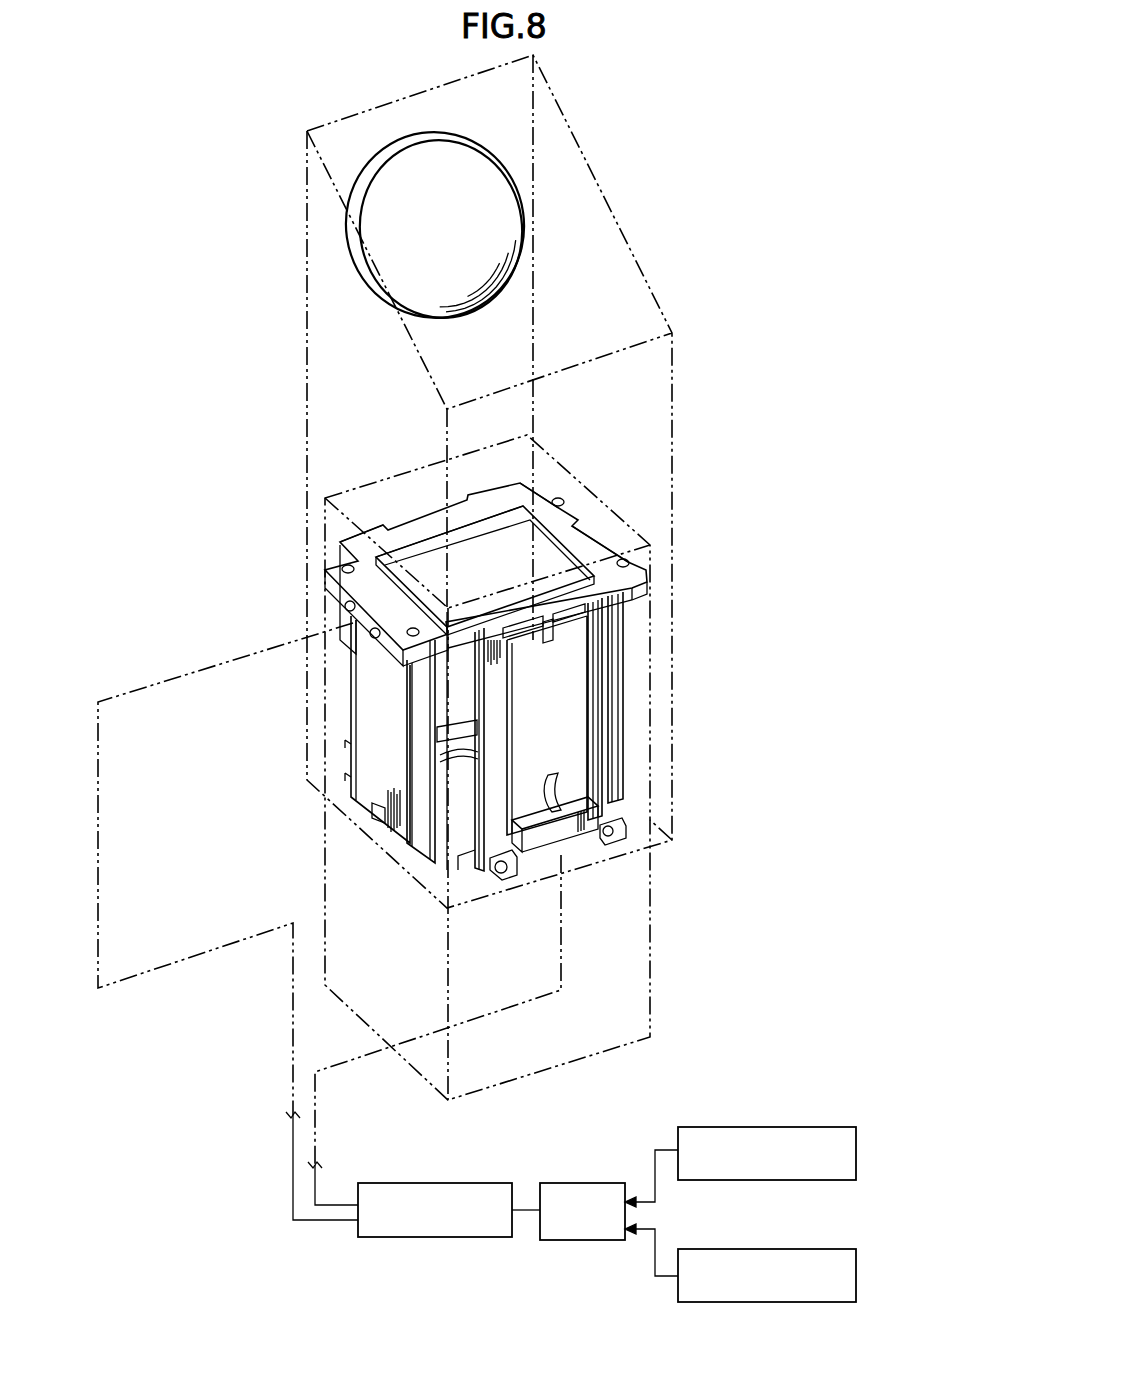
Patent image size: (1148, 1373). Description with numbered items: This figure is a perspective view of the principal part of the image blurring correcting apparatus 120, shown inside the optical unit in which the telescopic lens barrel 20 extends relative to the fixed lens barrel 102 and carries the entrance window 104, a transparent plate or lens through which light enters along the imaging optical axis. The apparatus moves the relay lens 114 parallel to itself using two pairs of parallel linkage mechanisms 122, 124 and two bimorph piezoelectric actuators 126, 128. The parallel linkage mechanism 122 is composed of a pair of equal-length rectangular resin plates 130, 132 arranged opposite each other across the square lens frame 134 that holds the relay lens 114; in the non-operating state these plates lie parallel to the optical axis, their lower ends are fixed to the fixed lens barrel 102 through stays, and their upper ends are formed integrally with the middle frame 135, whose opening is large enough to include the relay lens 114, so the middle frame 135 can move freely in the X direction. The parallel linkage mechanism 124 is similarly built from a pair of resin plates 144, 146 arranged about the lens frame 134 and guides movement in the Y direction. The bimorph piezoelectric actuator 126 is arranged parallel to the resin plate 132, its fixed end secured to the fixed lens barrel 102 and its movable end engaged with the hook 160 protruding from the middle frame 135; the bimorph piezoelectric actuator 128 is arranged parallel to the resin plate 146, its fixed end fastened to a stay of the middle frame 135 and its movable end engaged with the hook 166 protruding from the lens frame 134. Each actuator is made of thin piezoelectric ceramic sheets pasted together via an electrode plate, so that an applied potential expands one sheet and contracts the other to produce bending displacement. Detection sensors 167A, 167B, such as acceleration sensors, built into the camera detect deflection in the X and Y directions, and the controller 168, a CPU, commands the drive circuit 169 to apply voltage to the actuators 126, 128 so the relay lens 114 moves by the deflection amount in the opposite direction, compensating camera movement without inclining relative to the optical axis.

The lens barrel 20 is at (672, 345).
The fixed lens barrel 102 is at (652, 906).
The entrance window 104 is at (482, 192).
The relay lens 114 is at (462, 803).
The image blurring correcting apparatus 120 is at (620, 527).
The parallel linkage mechanism 122 is at (430, 452).
The parallel linkage mechanism 124 is at (583, 527).
The bimorph piezoelectric actuator 126 is at (585, 663).
The bimorph piezoelectric actuator 128 is at (380, 698).
The resin plate 130 is at (422, 560).
The resin plate 132 is at (614, 737).
The lens frame 134 is at (462, 857).
The middle frame 135 is at (517, 492).
The resin plate 144 is at (562, 568).
The resin plate 146 is at (356, 653).
The hook 160 is at (556, 632).
The hook 166 is at (375, 818).
The detection sensor 167A is at (782, 1127).
The detection sensor 167B is at (797, 1249).
The controller 168 is at (560, 1183).
The drive circuit 169 is at (448, 1240).